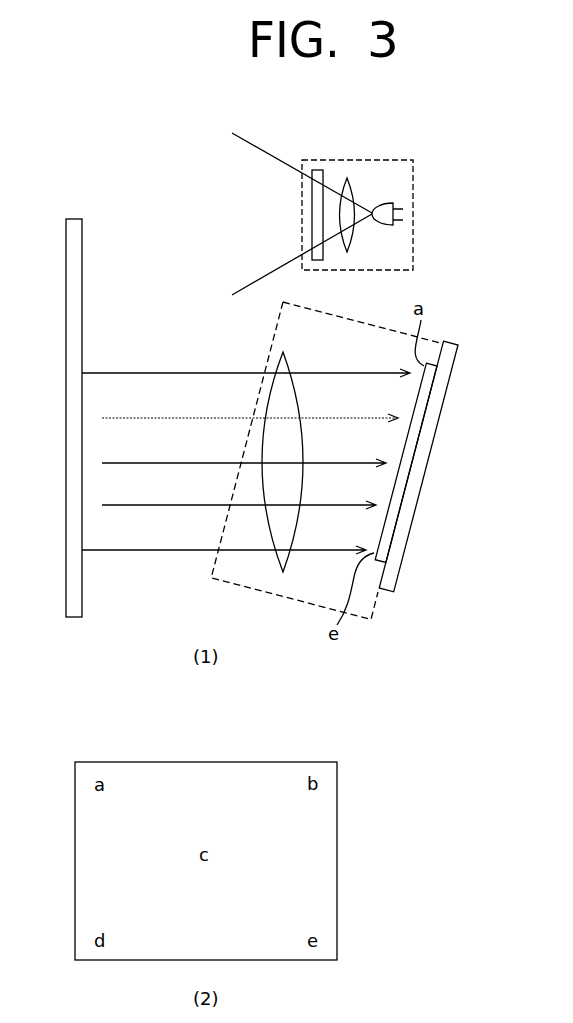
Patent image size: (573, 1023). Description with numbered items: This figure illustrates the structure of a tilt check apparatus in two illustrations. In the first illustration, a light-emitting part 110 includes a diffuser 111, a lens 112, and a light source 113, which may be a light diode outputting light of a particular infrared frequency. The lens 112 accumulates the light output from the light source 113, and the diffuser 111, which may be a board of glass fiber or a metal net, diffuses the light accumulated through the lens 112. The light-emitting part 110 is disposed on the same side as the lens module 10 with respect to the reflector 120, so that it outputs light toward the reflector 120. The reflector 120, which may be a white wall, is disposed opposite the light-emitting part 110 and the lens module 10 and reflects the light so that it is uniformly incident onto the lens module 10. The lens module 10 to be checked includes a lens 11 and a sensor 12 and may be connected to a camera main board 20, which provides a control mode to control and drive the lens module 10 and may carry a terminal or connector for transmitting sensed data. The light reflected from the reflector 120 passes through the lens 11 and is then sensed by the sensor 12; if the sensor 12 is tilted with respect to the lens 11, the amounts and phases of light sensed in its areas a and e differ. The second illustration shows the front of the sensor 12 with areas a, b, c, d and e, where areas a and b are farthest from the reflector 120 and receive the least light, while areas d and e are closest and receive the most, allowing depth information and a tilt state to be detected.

The lens module 10 is at (289, 601).
The lens 11 is at (270, 562).
The sensor 12 is at (385, 566).
The camera main board 20 is at (394, 590).
The light-emitting part 110 is at (414, 170).
The diffuser 111 is at (318, 170).
The lens 112 is at (346, 178).
The light source 113 is at (392, 203).
The reflector 120 is at (72, 619).